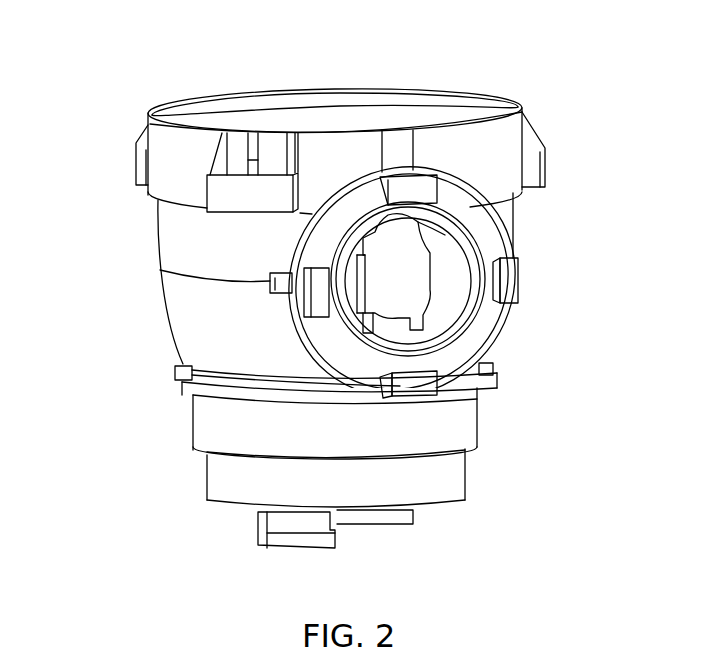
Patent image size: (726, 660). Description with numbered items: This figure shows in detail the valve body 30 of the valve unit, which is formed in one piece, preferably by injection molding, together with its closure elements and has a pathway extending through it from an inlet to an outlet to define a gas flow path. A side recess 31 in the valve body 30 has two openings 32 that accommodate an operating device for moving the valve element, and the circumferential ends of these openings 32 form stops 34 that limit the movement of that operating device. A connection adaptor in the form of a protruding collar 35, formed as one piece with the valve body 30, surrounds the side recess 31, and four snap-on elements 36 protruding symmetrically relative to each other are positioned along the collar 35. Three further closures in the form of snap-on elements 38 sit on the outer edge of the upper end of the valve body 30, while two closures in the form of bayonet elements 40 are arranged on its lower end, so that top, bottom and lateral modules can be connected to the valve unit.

The valve body 30 is at (125, 72).
The side recess 31 is at (398, 283).
The openings 32 is at (363, 320).
The stops 34 is at (437, 176).
The protruding collar 35 is at (318, 239).
The snap-on elements 36 is at (512, 283).
The snap-on elements 38 is at (243, 203).
The bayonet elements 40 is at (282, 522).